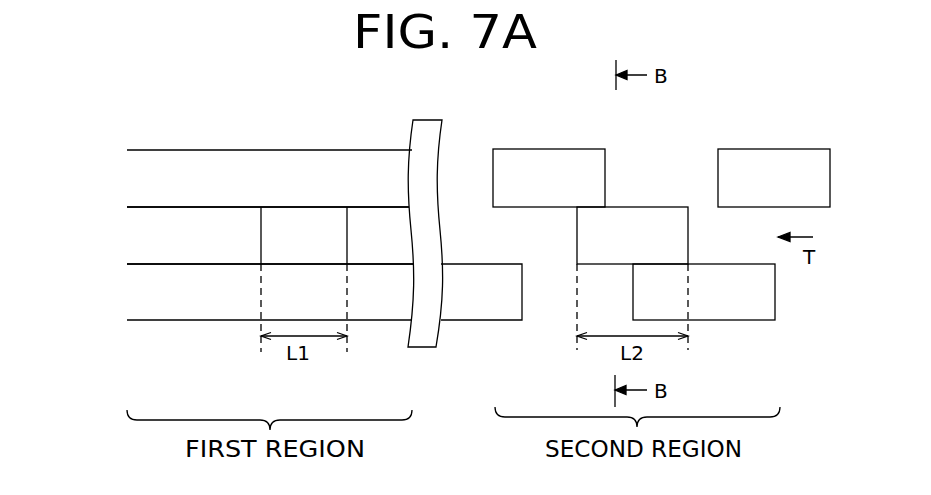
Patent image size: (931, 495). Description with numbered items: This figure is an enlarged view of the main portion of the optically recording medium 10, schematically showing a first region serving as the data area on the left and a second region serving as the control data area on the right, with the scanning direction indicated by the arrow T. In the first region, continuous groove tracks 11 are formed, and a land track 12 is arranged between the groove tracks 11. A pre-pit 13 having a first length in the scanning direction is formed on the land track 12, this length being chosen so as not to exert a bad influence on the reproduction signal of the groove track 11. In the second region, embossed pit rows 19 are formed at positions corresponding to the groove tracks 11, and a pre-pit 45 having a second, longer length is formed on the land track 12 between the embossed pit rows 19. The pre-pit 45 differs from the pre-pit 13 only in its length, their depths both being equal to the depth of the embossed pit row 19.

The optically recording medium 10 is at (467, 124).
The groove track 11 is at (236, 235).
The land track 12 is at (250, 235).
The pre-pit 13 is at (307, 230).
The embossed pit row 19 is at (492, 290).
The pre-pit 45 is at (613, 240).